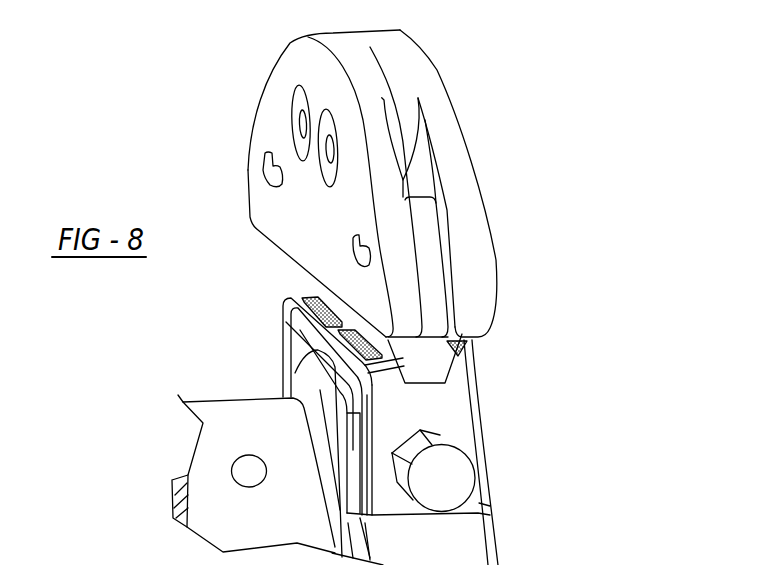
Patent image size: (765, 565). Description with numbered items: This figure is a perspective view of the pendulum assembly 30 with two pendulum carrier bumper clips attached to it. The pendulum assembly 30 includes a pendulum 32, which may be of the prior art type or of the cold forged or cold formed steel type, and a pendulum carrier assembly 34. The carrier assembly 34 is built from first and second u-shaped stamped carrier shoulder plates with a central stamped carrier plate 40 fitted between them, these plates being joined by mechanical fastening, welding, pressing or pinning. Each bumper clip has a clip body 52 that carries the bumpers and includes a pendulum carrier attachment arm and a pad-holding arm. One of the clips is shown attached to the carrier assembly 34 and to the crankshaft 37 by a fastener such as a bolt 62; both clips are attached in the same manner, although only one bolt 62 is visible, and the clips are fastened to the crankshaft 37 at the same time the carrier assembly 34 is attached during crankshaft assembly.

The pendulum assembly 30 is at (495, 140).
The pendulum 32 is at (403, 58).
The pendulum carrier assembly 34 is at (305, 333).
The crankshaft 37 is at (448, 540).
The central stamped carrier plate 40 is at (435, 262).
The clip body 52 is at (296, 297).
The bolt 62 is at (448, 465).